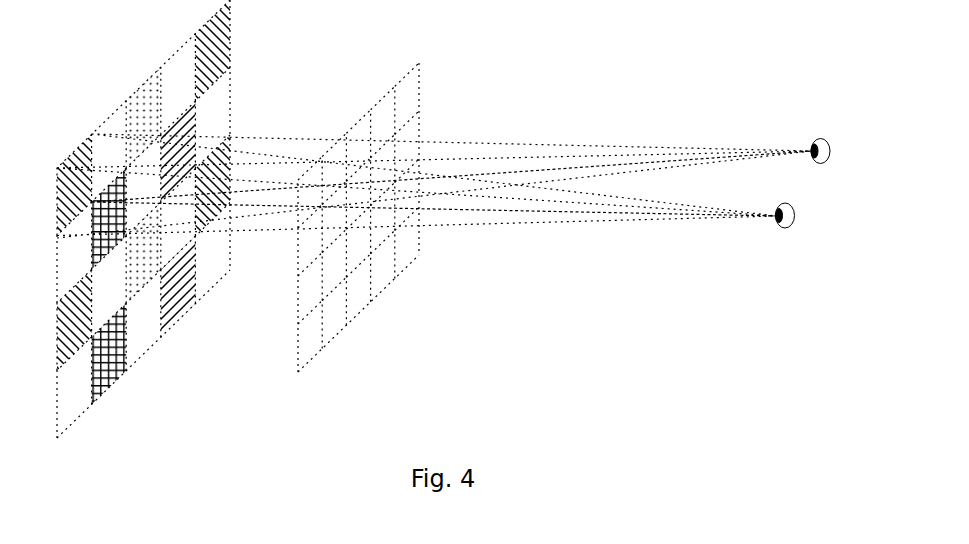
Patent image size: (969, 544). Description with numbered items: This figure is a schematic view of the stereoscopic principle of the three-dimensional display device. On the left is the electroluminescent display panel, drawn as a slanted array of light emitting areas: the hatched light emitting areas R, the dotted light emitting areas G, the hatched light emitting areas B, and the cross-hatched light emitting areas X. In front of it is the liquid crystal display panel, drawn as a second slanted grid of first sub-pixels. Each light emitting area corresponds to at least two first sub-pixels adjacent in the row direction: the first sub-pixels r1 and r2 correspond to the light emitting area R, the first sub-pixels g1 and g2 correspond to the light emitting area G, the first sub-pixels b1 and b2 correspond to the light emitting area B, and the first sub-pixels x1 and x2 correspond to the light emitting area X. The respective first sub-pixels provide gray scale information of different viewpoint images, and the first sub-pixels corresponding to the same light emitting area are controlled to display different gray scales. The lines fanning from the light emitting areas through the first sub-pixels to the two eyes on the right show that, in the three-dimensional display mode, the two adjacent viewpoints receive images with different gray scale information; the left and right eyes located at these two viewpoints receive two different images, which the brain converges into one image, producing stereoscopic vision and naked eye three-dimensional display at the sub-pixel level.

The light emitting area R is at (143, 185).
The light emitting area G is at (143, 185).
The light emitting area B is at (178, 219).
The light emitting area X is at (109, 286).
The first sub-pixel r1 is at (358, 193).
The first sub-pixel r2 is at (334, 216).
The first sub-pixel g1 is at (358, 193).
The first sub-pixel g2 is at (383, 169).
The first sub-pixel b1 is at (383, 217).
The first sub-pixel b2 is at (358, 241).
The first sub-pixel x1 is at (334, 264).
The first sub-pixel x2 is at (358, 241).